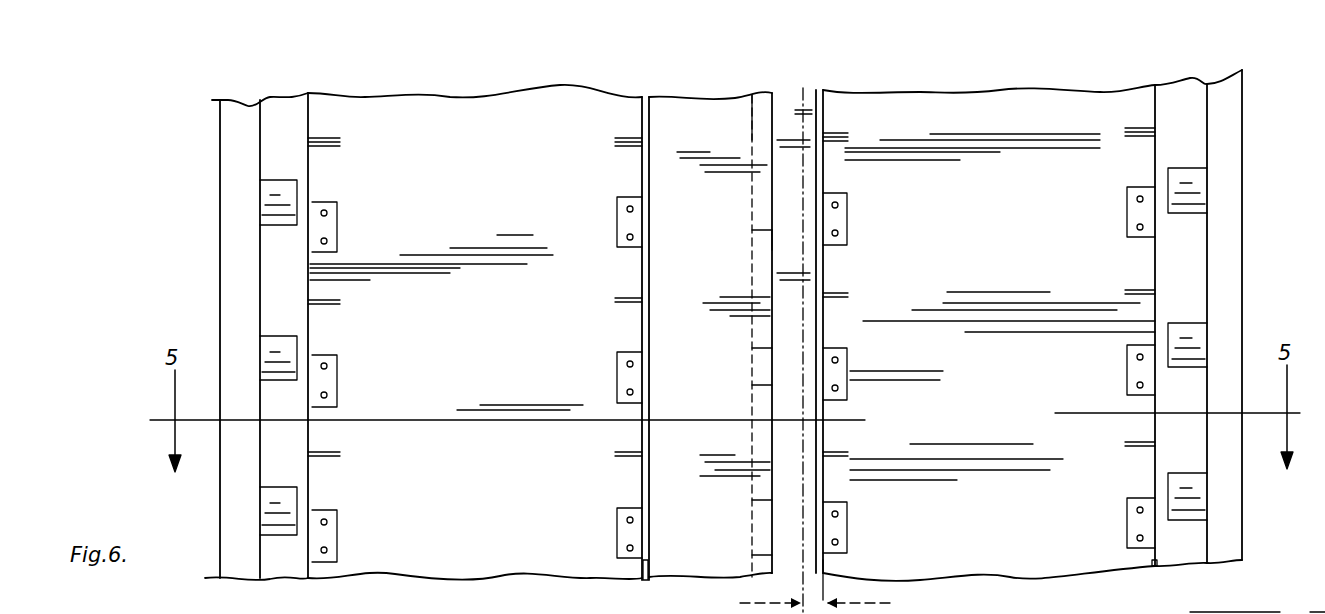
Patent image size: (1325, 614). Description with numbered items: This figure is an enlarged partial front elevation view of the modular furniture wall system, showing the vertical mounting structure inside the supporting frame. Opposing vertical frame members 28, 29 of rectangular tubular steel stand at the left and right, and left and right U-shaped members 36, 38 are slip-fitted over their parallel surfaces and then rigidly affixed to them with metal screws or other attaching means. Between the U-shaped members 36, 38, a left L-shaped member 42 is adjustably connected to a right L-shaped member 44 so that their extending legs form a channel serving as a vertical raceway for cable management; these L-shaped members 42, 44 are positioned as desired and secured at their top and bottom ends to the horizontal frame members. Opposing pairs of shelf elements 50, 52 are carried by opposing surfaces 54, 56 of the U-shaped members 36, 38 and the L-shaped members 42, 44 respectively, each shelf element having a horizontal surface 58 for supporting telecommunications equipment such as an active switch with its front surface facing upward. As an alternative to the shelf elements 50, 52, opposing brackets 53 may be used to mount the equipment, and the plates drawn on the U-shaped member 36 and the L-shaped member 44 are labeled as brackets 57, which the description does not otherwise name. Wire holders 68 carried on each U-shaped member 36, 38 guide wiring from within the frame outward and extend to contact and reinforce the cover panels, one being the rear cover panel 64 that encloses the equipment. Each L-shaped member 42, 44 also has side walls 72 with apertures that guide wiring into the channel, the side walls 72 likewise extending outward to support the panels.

The vertical frame member 28 is at (250, 100).
The vertical frame member 29 is at (1222, 105).
The left U-shaped member 36 is at (316, 83).
The right U-shaped member 38 is at (1194, 80).
The left L-shaped member 42 is at (652, 115).
The right L-shaped member 44 is at (817, 87).
The shelf element 50 is at (345, 140).
The shelf element 52 is at (625, 150).
The bracket 53 is at (620, 240).
The opposing surface 54 is at (832, 575).
The opposing surface 56 is at (640, 578).
The mounting plate 57 is at (338, 220).
The horizontal surface 58 is at (312, 140).
The rear cover panel 64 is at (732, 333).
The wire holder 68 is at (290, 197).
The side wall 72 is at (807, 120).